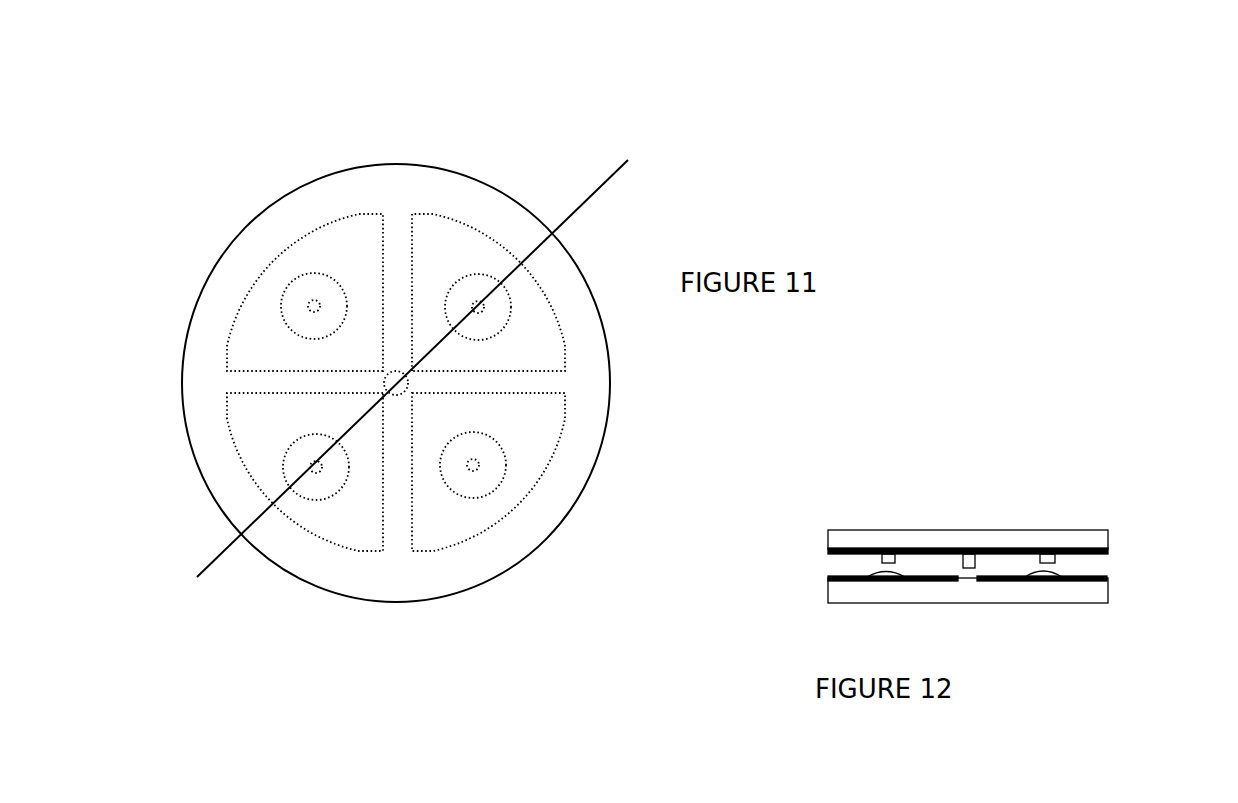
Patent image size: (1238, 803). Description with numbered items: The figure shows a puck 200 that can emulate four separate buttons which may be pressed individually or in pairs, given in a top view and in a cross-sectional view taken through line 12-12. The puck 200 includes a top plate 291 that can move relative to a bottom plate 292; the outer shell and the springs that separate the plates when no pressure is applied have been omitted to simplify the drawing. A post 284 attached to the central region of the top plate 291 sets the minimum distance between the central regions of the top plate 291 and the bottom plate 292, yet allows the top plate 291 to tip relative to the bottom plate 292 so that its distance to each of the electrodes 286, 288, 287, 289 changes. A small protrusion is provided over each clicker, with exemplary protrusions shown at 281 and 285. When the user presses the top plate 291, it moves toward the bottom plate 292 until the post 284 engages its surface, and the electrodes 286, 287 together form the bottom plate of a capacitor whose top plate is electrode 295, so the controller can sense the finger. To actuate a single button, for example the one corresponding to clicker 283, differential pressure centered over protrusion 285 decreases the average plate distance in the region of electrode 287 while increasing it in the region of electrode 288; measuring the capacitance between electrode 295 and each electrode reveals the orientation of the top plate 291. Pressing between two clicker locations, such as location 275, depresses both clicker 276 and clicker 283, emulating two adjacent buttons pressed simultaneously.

In FIG. 11, the puck 200 is at (150, 119).
In FIG. 11, the line 12- 12 is at (571, 206).
In FIG. 11, the top plate 291 is at (608, 389).
In FIG. 12, the top plate 291 is at (1088, 535).
In FIG. 12, the bottom plate 292 is at (1030, 592).
In FIG. 12, the electrode 295 is at (828, 553).
In FIG. 11, the electrode 288 is at (440, 237).
In FIG. 12, the electrode 288 is at (830, 578).
In FIG. 11, the electrode 286 is at (308, 246).
In FIG. 11, the electrode 287 is at (353, 537).
In FIG. 12, the electrode 287 is at (1107, 574).
In FIG. 11, the electrode 289 is at (473, 523).
In FIG. 11, the protrusion 281 is at (477, 305).
In FIG. 12, the protrusion 281 is at (903, 550).
In FIG. 11, the clicker 283 is at (323, 495).
In FIG. 12, the clicker 283 is at (1050, 571).
In FIG. 11, the post 284 is at (408, 377).
In FIG. 12, the post 284 is at (968, 553).
In FIG. 11, the protrusion 285 is at (313, 462).
In FIG. 12, the protrusion 285 is at (1037, 553).
In FIG. 11, the clicker 276 is at (497, 477).
In FIG. 11, the location 275 is at (408, 478).